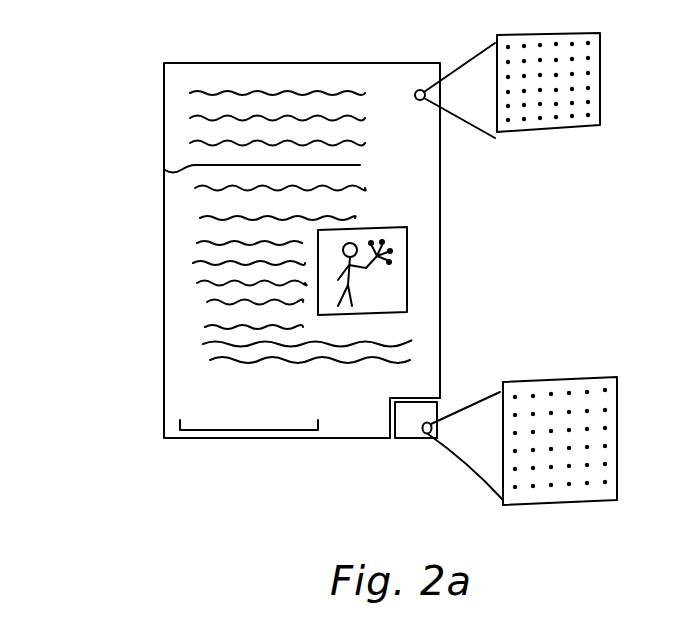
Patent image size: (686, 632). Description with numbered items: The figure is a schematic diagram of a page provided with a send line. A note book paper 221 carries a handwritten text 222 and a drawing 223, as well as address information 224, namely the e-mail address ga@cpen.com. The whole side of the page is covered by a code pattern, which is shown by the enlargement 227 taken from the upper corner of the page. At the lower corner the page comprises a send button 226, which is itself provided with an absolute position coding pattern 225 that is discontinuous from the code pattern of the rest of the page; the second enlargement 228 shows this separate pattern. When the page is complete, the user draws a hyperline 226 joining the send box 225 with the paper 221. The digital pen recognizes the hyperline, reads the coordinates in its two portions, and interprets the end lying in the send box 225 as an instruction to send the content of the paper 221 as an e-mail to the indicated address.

The note book paper 221 is at (160, 97).
The text 222 is at (165, 171).
The drawing 223 is at (407, 250).
The address information 224 is at (212, 418).
The absolute position coding pattern 225 is at (410, 440).
The send button 226 is at (424, 404).
The enlargement 227 is at (555, 132).
The magnified dot pattern (lower) 228 is at (588, 373).